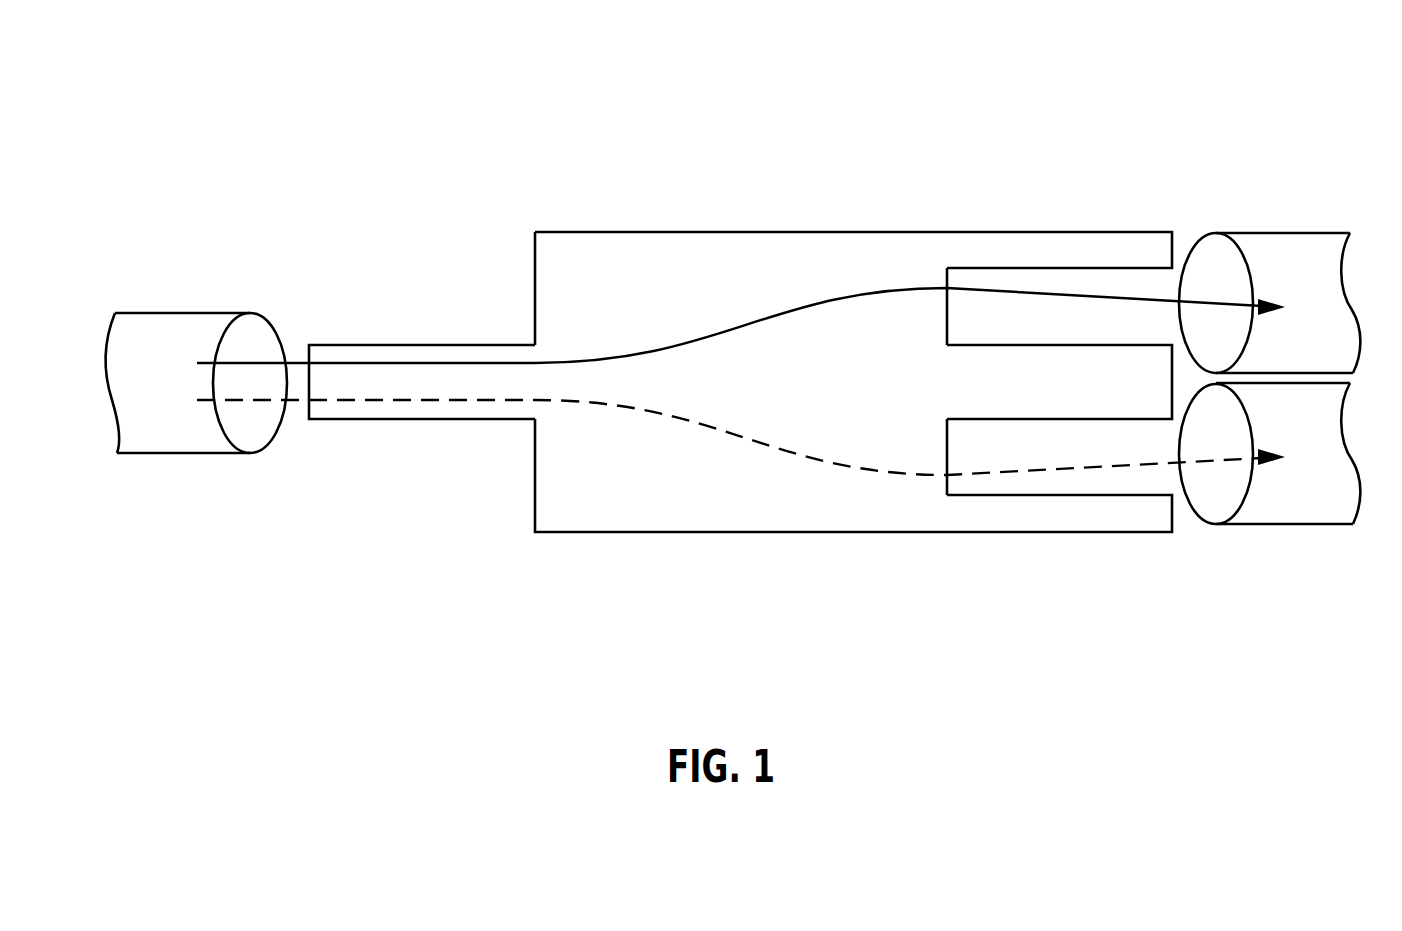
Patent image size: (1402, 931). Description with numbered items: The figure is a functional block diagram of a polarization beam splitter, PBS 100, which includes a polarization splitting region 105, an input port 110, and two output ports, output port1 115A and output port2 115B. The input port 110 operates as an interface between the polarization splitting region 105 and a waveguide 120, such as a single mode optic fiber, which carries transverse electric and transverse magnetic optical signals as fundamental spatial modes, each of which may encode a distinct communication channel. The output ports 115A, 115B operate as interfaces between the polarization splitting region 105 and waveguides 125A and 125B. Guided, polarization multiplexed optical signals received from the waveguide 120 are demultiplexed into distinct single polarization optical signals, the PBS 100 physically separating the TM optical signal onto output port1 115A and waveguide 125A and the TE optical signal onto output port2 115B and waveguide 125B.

The polarization beam splitter 100 is at (1085, 91).
The polarization splitting region 105 is at (947, 222).
The input port 110 is at (422, 367).
The output port1 115A is at (1059, 513).
The output port2 115B is at (1059, 325).
The waveguide 120 is at (168, 453).
The waveguide 125A is at (1268, 524).
The waveguide 125B is at (1268, 233).